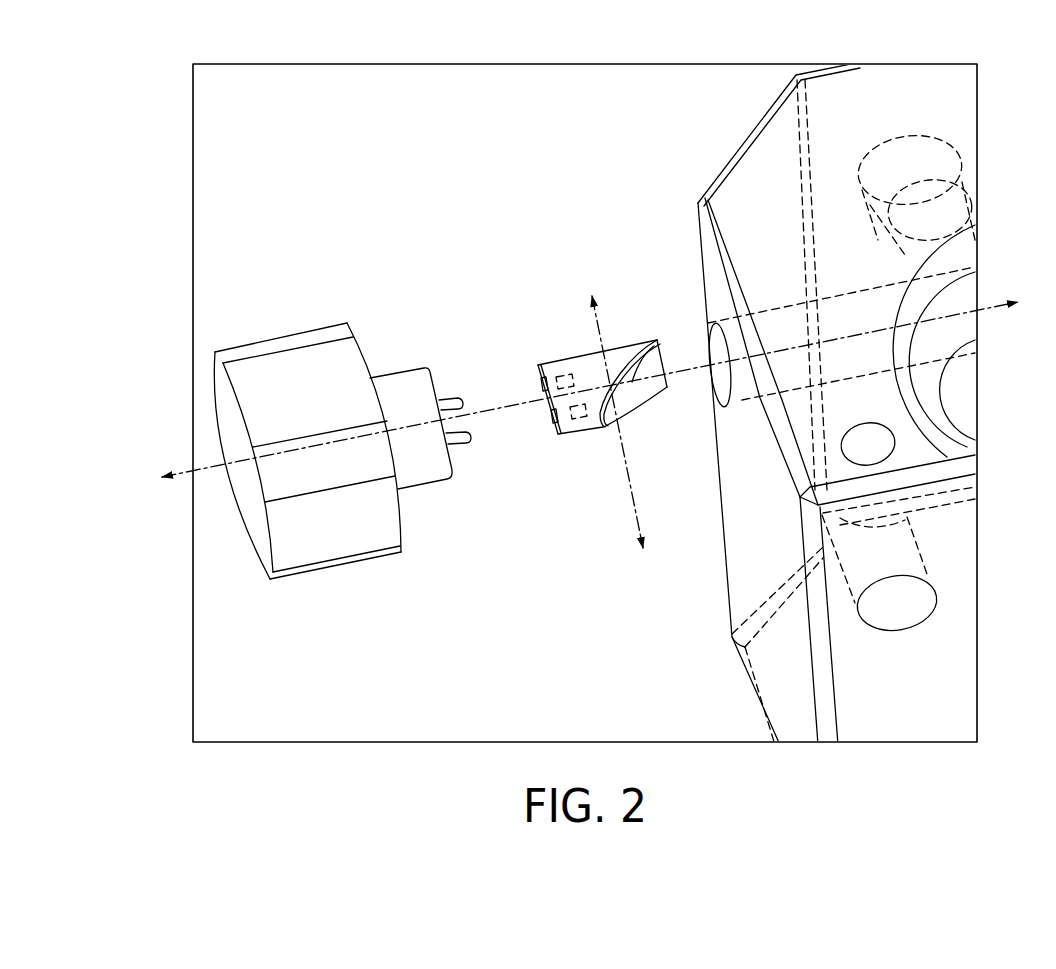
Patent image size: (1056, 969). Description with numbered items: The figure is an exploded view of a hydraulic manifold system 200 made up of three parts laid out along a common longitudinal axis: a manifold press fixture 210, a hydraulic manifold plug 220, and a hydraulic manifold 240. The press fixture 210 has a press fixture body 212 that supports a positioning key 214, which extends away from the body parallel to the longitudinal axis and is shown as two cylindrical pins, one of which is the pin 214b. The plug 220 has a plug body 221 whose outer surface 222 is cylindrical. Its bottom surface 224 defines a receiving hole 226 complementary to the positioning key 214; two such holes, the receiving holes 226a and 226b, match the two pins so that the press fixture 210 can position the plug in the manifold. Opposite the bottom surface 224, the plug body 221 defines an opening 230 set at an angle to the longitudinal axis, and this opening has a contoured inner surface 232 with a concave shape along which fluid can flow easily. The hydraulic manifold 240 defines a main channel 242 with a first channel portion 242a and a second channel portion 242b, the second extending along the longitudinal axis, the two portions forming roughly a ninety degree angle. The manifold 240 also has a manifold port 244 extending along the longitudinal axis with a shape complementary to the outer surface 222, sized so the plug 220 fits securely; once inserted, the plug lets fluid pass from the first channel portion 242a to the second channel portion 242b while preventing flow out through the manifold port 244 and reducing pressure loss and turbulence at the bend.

The hydraulic manifold system 200 is at (447, 177).
The manifold press fixture 210 is at (301, 325).
The press fixture body 212 is at (467, 567).
The positioning key 214 is at (465, 416).
The pin 214b is at (470, 478).
The hydraulic manifold plug 220 is at (590, 347).
The plug body 221 is at (567, 357).
The outer surface 222 is at (612, 360).
The bottom surface 224 is at (557, 437).
The receiving hole 226 is at (519, 402).
The receiving hole 226a is at (541, 384).
The receiving hole 226b is at (552, 421).
The opening 230 is at (592, 421).
The inner surface 232 is at (638, 371).
The hydraulic manifold 240 is at (741, 127).
The main channel 242 is at (904, 415).
The first channel portion 242a is at (894, 612).
The second channel portion 242b is at (874, 312).
The manifold port 244 is at (717, 378).